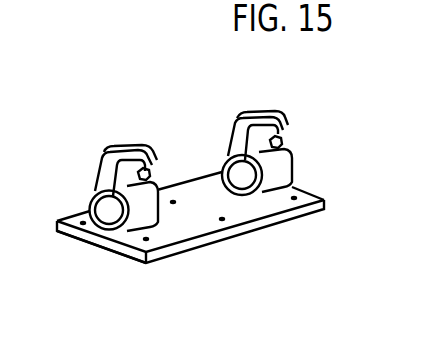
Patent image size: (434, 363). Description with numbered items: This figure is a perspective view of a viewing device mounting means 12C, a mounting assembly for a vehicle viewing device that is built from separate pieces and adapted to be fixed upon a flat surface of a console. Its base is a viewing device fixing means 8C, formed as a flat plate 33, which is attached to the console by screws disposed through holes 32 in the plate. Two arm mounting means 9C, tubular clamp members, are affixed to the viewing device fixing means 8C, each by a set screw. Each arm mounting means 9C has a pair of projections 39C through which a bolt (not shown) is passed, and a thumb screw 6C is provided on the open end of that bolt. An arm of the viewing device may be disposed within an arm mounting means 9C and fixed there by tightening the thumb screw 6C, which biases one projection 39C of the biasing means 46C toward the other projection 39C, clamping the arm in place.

The biasing means 46C is at (211, 152).
The projections 39C is at (154, 157).
The arm mounting means 9C is at (105, 167).
The thumb screw 6C is at (152, 161).
The holes 32 is at (312, 192).
The viewing device fixing means 8C is at (282, 221).
The flat plate 33 is at (197, 220).
The viewing device mounting means 12C is at (87, 248).